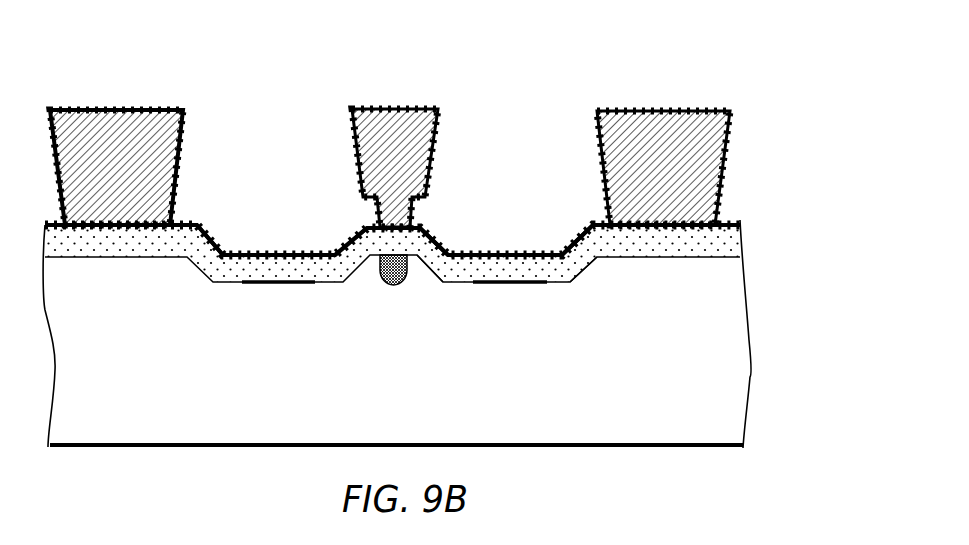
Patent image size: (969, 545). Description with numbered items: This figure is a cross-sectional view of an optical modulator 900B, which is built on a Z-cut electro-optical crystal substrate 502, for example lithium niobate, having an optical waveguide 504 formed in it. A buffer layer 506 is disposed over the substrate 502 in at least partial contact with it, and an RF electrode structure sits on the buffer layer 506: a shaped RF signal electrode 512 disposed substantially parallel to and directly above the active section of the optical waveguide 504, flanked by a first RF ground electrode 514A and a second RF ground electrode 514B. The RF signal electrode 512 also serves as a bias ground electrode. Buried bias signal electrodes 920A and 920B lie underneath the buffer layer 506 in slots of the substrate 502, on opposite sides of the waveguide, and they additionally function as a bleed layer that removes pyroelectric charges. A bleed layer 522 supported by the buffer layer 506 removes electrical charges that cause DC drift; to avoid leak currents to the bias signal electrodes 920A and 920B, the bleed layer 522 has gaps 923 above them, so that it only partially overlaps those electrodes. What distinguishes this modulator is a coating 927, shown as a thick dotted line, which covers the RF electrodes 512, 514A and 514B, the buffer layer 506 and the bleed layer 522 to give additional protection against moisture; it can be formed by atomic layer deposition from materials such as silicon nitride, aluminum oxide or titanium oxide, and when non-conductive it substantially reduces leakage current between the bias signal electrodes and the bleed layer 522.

The optical modulator 900B is at (576, 52).
The electro-optical crystal substrate 502 is at (397, 334).
The optical waveguide 504 is at (395, 303).
The buffer layer 506 is at (733, 228).
The RF signal electrode 512 is at (395, 168).
The first RF ground electrode 514A is at (116, 167).
The second RF ground electrode 514B is at (663, 168).
The bleed layer 522 is at (570, 243).
The first bias signal electrode 920A is at (268, 283).
The second bias signal electrode 920B is at (512, 283).
The gaps 923 is at (273, 232).
The coating 927 is at (709, 102).